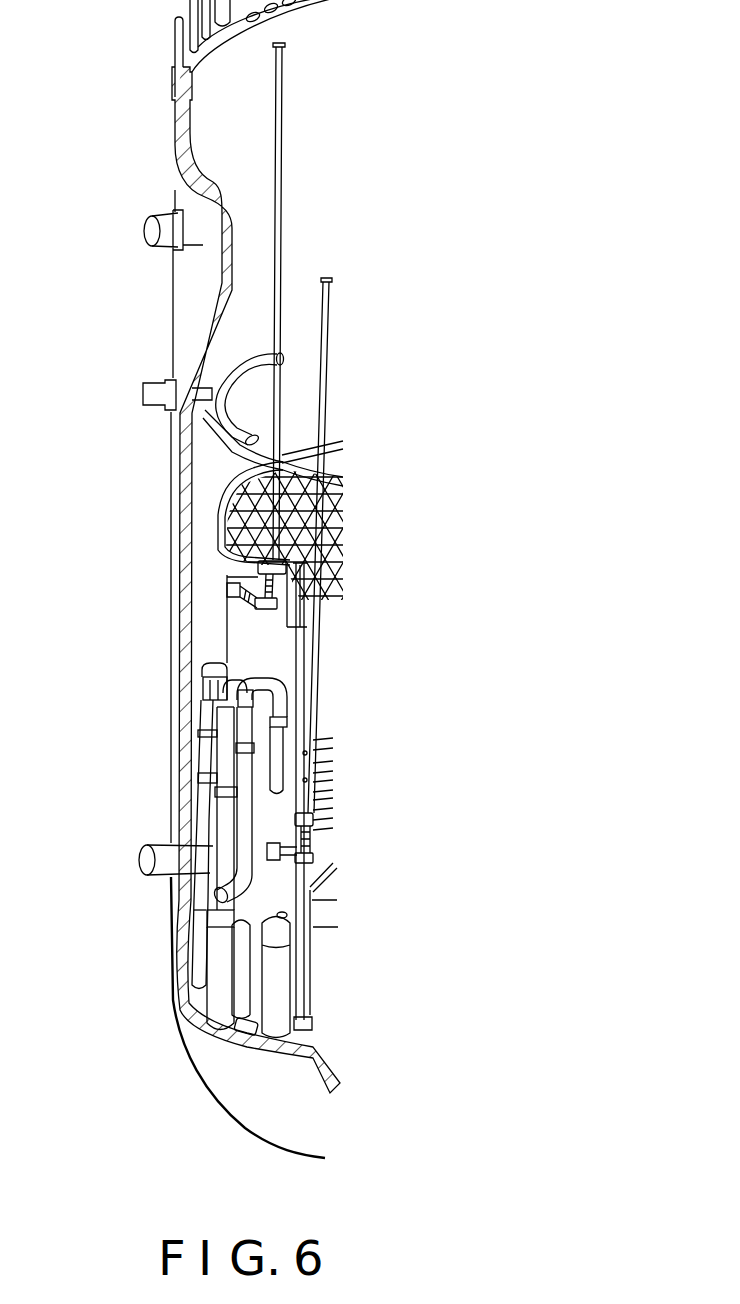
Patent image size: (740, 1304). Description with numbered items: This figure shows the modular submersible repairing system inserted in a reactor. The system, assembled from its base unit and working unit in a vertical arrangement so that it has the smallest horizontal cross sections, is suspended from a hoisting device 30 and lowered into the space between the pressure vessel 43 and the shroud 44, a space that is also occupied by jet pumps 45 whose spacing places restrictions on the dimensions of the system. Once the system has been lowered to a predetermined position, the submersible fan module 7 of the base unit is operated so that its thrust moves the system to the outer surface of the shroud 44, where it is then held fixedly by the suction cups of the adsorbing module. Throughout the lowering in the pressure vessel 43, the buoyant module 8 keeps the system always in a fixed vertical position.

The submersible fan module 7 is at (262, 600).
The buoyant module 8 is at (258, 565).
The hoisting device 30 is at (283, 135).
The pressure vessel 43 is at (178, 612).
The shroud 44 is at (288, 655).
The jet pumps 45 is at (245, 757).